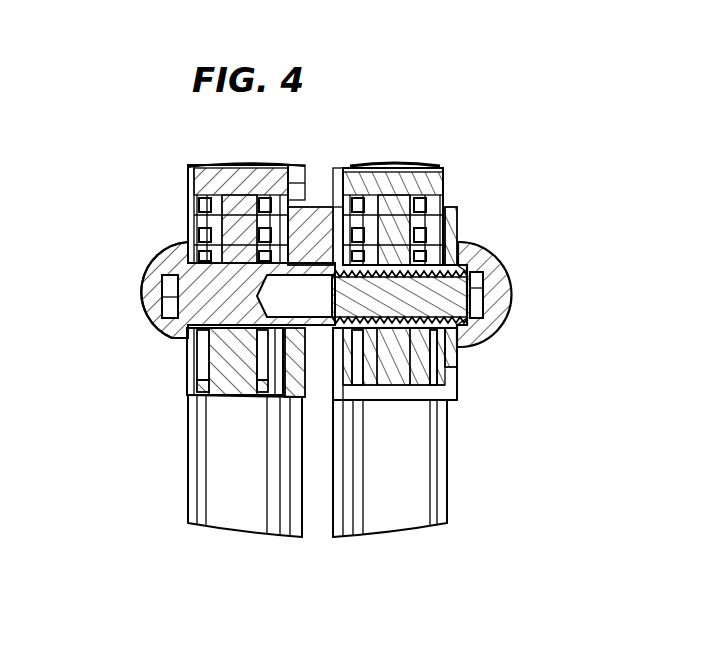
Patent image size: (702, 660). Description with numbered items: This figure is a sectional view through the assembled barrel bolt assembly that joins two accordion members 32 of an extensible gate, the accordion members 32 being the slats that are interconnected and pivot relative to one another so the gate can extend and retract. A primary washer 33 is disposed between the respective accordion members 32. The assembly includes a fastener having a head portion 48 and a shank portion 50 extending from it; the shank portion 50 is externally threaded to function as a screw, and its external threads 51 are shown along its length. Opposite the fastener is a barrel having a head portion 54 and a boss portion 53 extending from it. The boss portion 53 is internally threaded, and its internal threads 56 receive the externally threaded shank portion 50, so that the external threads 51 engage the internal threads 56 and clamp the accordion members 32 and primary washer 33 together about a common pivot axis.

The accordion member 32 is at (238, 496).
The primary washer 33 is at (314, 230).
The head portion 48 is at (487, 274).
The shank portion 50 is at (445, 302).
The external threads 51 is at (455, 268).
The boss portion 53 is at (215, 300).
The head portion 54 is at (178, 262).
The internal threads 56 is at (455, 330).